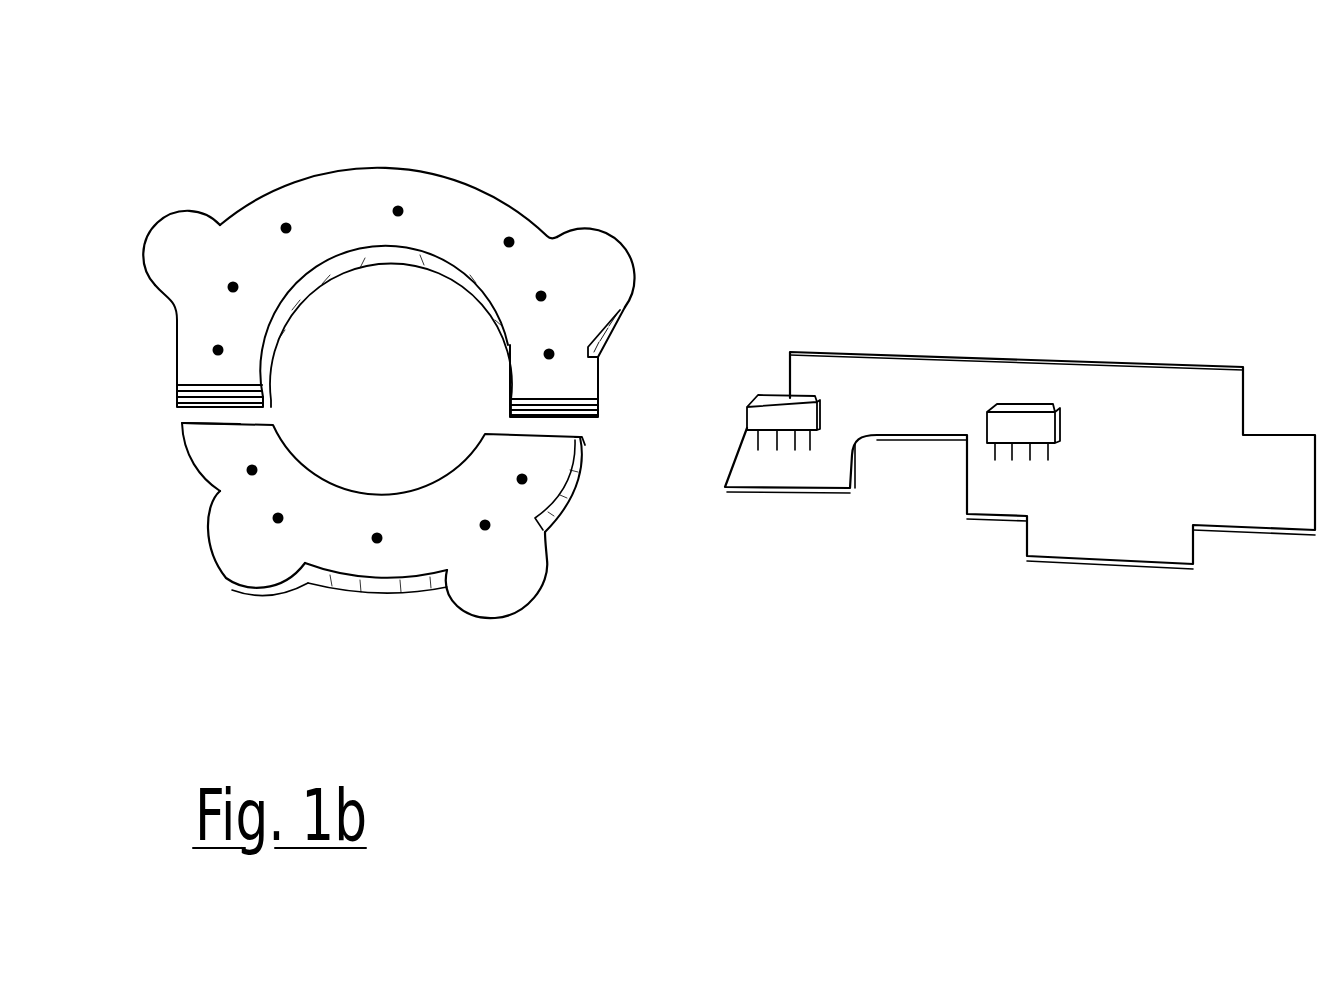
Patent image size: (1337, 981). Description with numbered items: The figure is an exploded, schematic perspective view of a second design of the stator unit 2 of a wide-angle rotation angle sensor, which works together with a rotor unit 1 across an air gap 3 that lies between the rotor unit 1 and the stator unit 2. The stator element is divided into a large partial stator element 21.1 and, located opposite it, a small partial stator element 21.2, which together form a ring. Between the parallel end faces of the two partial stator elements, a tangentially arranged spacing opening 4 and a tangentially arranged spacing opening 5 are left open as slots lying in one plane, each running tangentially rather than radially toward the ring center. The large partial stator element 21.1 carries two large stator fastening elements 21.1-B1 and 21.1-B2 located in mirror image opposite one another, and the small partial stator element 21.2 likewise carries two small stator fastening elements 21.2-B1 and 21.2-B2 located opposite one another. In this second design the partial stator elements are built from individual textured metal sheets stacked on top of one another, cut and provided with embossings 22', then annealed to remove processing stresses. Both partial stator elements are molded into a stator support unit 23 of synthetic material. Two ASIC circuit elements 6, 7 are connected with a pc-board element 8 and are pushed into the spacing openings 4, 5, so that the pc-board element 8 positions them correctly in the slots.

The rotor unit 1 is at (377, 307).
The stator unit 2 is at (537, 112).
The air gap 3 is at (420, 288).
The spacing opening 4 is at (215, 418).
The spacing opening 5 is at (585, 450).
The ASIC circuit element 6 is at (792, 413).
The ASIC circuit element 7 is at (1035, 423).
The pc-board element 8 is at (1213, 402).
The large partial stator element 21.1 is at (512, 238).
The large stator fastening element 21.1-B1 is at (183, 227).
The large stator fastening element 21.1-B2 is at (605, 247).
The small partial stator element 21.2 is at (413, 582).
The small stator fastening element 21.2-B1 is at (223, 553).
The small stator fastening element 21.2-B2 is at (523, 583).
The embossings 22' is at (384, 317).
The stator support unit 23 is at (598, 414).